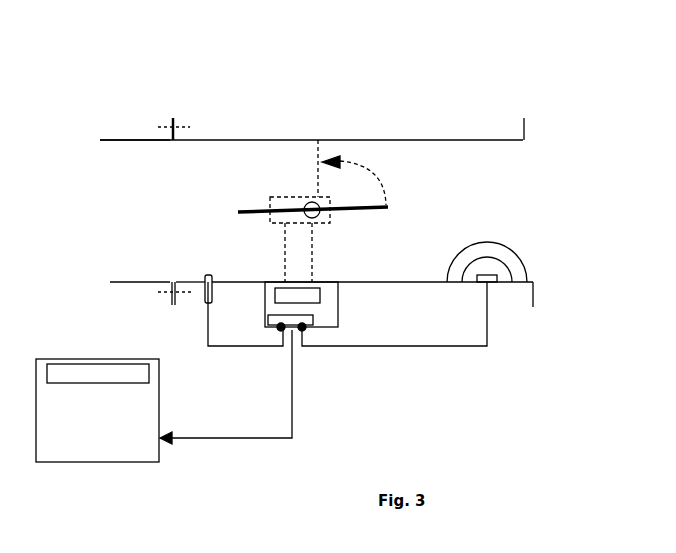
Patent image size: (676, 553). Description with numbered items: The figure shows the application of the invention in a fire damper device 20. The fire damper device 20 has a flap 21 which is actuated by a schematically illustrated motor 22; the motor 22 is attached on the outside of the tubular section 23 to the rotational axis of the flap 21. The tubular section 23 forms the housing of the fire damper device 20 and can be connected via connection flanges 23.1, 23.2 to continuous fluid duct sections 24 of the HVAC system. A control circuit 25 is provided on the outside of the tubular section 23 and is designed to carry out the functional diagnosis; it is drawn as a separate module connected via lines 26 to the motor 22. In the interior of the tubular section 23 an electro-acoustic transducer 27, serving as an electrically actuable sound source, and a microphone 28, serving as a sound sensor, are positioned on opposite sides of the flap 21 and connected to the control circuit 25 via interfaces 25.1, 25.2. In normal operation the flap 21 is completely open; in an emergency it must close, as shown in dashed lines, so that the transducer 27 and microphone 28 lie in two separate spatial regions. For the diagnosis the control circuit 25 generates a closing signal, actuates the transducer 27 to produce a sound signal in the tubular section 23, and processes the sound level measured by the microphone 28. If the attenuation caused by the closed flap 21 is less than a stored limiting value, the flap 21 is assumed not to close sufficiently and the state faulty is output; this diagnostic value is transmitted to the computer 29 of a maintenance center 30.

The fire damper device 20 is at (425, 132).
The flap 21 is at (386, 205).
The motor 22 is at (270, 197).
The tubular section 23 is at (303, 140).
The connection flange 23.1 is at (174, 116).
The connection flange 23.2 is at (523, 118).
The fluid duct section 24 is at (137, 140).
The control circuit 25 is at (339, 300).
The interface 25.1 is at (280, 334).
The interface 25.2 is at (303, 333).
The lines 26 is at (283, 265).
The electro-acoustic transducer 27 is at (492, 285).
The microphone 28 is at (204, 292).
The computer 29 is at (316, 320).
The maintenance center 30 is at (57, 359).